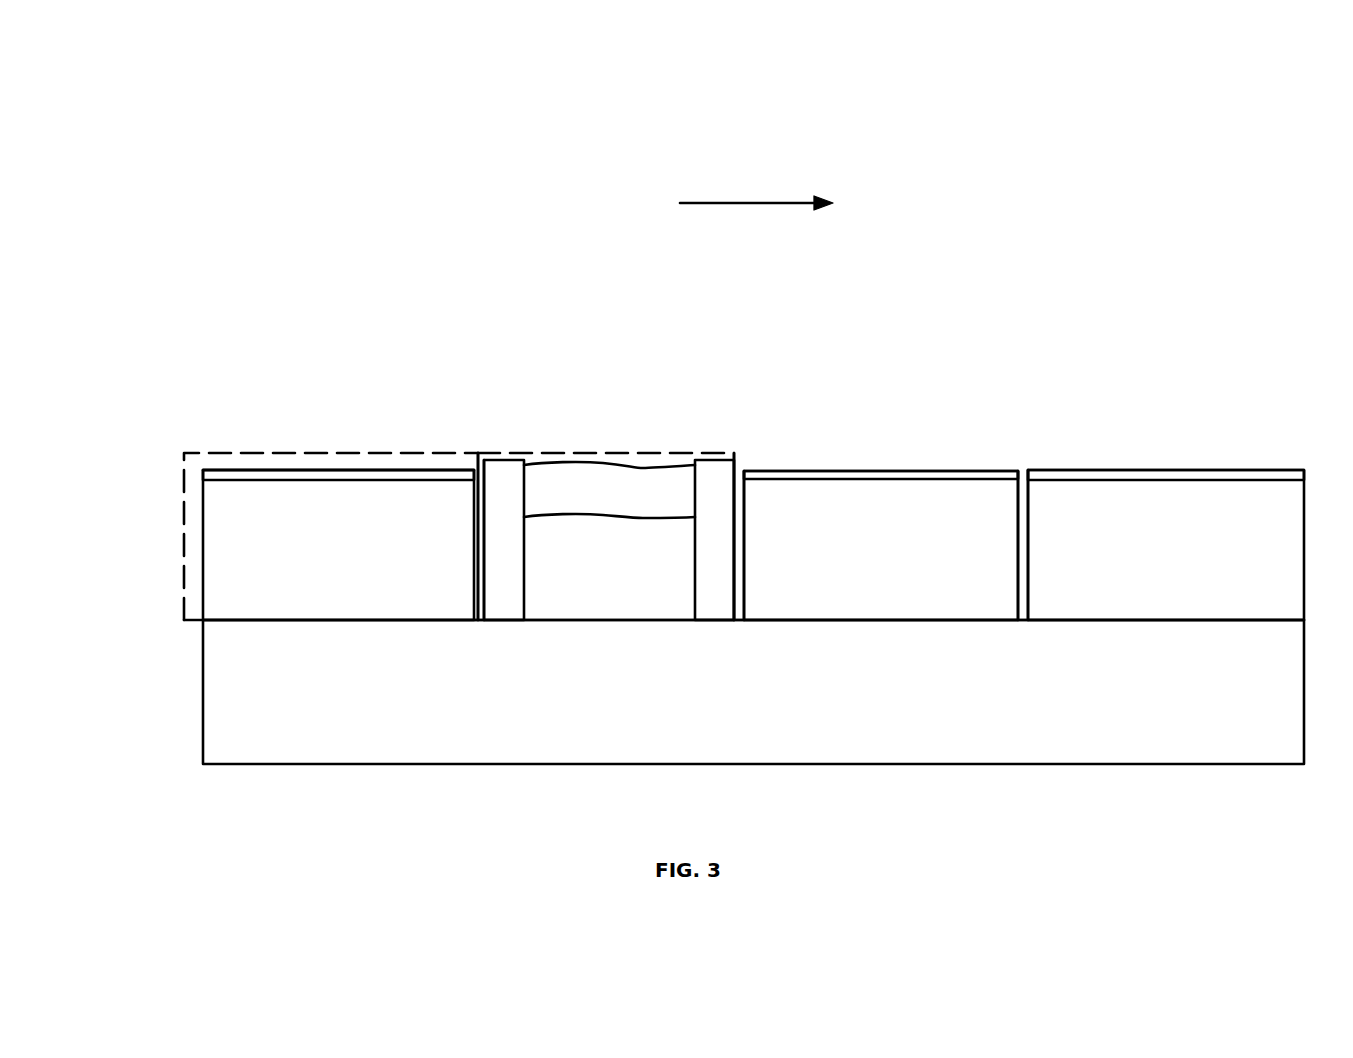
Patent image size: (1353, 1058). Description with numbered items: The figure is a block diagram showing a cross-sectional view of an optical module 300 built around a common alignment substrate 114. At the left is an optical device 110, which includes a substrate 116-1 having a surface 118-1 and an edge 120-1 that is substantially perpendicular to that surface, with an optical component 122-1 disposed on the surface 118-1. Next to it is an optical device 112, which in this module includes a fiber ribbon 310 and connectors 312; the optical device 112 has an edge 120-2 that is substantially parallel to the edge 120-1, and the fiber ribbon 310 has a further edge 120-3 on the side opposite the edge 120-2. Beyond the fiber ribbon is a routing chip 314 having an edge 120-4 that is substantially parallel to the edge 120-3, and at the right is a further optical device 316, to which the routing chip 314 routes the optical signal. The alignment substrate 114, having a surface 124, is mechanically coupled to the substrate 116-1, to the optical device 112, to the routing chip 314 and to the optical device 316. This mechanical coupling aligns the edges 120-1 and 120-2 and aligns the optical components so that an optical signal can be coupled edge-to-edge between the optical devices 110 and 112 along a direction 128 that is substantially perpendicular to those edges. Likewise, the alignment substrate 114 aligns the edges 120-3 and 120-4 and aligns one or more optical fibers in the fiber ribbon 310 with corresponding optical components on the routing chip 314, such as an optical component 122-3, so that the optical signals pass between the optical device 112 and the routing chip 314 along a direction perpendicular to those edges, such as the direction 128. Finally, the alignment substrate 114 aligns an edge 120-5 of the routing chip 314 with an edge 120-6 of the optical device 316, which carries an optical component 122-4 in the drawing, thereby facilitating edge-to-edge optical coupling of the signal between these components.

The optical module 300 is at (1102, 130).
The direction 128 is at (757, 200).
The optical device 110 is at (236, 448).
The optical device 112 is at (696, 450).
The alignment substrate 114 is at (713, 714).
The substrate 116-1 is at (309, 567).
The surface 118-1 is at (400, 478).
The edge 120-1 is at (477, 542).
The edge 120-2 is at (486, 462).
The edge 120-3 is at (736, 472).
The edge 120-4 is at (746, 550).
The edge 120-5 is at (1020, 497).
The edge 120-6 is at (1029, 553).
The optical component 122-1 is at (287, 477).
The optical component 122-3 is at (915, 477).
The optical component 122-4 is at (1202, 477).
The surface 124 is at (317, 620).
The fiber ribbon 310 is at (597, 486).
The connectors 312 is at (718, 583).
The routing chip 314 is at (863, 567).
The optical device 316 is at (1148, 569).